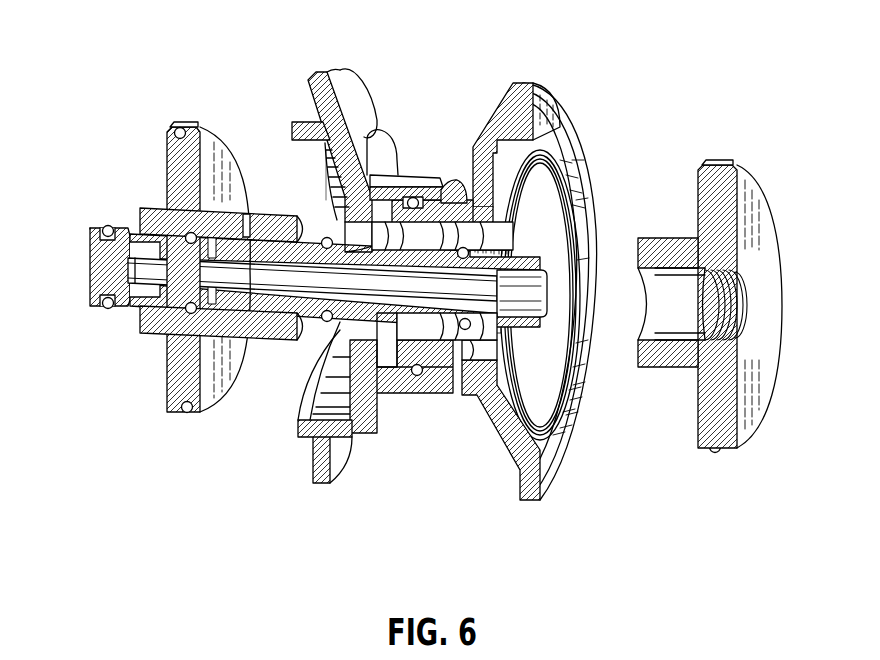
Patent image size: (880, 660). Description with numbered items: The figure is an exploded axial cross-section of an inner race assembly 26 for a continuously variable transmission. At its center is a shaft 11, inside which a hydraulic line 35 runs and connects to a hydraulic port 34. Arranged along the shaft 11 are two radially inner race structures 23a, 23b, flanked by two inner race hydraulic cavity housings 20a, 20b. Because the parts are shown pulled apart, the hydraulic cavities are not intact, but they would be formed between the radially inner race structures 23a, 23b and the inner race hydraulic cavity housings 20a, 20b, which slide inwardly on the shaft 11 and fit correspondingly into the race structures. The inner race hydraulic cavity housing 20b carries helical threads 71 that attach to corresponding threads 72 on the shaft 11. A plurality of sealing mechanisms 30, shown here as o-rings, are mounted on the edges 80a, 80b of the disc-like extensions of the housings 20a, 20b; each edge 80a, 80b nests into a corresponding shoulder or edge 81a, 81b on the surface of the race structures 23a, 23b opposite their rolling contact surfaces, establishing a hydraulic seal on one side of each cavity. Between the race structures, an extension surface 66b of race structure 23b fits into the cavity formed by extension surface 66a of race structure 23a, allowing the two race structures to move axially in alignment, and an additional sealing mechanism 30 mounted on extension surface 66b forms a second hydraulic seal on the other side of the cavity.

The shaft 11 is at (100, 264).
The inner race hydraulic cavity housing 20a is at (172, 160).
The inner race hydraulic cavity housing 20b is at (760, 200).
The radially inner race structure 23a is at (312, 78).
The radially inner race structure 23b is at (525, 82).
The inner race assembly 26 is at (744, 56).
The sealing mechanism 30 is at (181, 127).
The hydraulic port 34 is at (340, 300).
The hydraulic line 35 is at (178, 300).
The extension surface 66a is at (400, 174).
The extension surface 66b is at (453, 186).
The helical threads 71 is at (745, 307).
The threads 72 is at (470, 380).
The edge 80a is at (207, 130).
The edge 80b is at (740, 160).
The shoulder or edge 81a is at (314, 148).
The shoulder or edge 81b is at (584, 152).